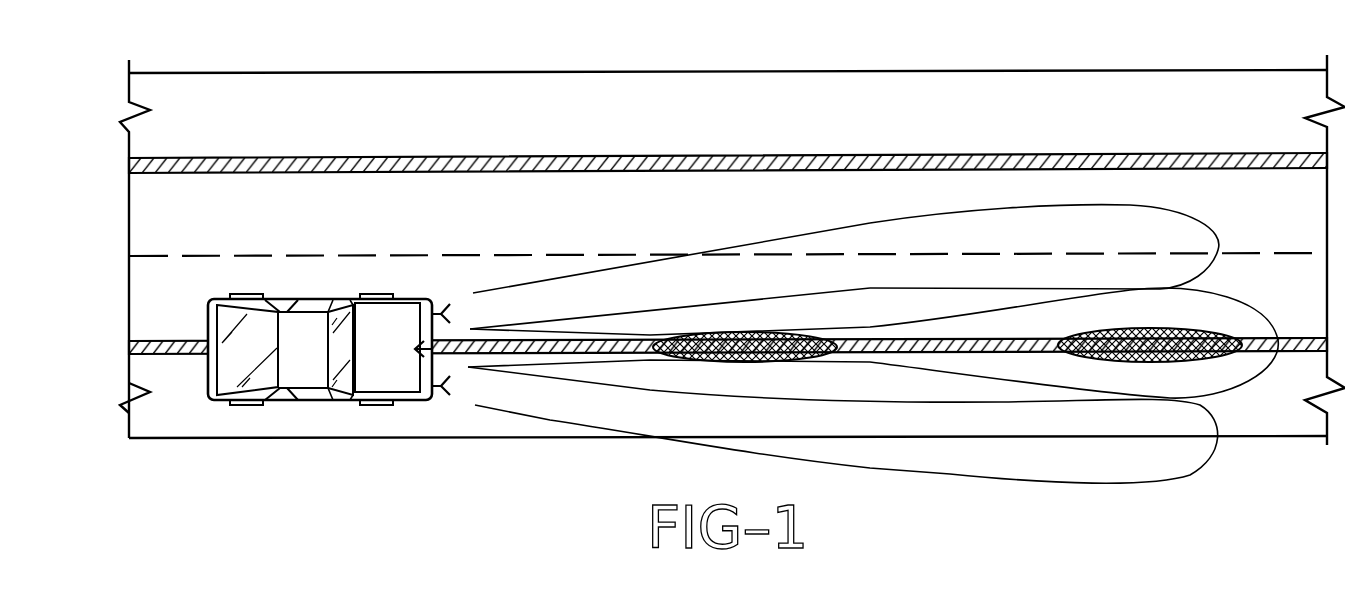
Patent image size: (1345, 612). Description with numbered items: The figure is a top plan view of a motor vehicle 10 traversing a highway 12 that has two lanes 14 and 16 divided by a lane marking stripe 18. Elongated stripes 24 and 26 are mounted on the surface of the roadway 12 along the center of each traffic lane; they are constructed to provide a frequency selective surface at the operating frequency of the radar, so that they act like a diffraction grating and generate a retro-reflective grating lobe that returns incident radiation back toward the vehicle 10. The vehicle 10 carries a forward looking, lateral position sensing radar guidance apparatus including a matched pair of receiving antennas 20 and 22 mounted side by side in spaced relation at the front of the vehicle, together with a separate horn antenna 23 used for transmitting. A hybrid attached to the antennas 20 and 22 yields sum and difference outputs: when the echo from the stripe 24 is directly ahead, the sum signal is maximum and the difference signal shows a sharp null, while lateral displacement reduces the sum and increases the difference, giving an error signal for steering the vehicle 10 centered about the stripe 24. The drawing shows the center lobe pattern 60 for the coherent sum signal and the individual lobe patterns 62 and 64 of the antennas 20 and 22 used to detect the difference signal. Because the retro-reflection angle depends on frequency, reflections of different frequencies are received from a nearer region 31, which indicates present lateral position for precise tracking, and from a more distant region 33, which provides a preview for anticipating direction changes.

The motor vehicle 10 is at (312, 360).
The highway 12 is at (167, 435).
The lane 14 is at (1278, 408).
The lane 16 is at (1202, 112).
The lane marking stripe 18 is at (296, 252).
The antenna 20 is at (449, 303).
The antenna 22 is at (450, 400).
The horn antenna 23 is at (412, 349).
The elongated stripe 24 is at (170, 342).
The elongated stripe 26 is at (375, 158).
The near region 31 is at (693, 336).
The distant region 33 is at (1190, 333).
The center lobe pattern 60 is at (792, 290).
The lobe pattern 62 is at (1203, 222).
The lobe pattern 64 is at (1015, 480).